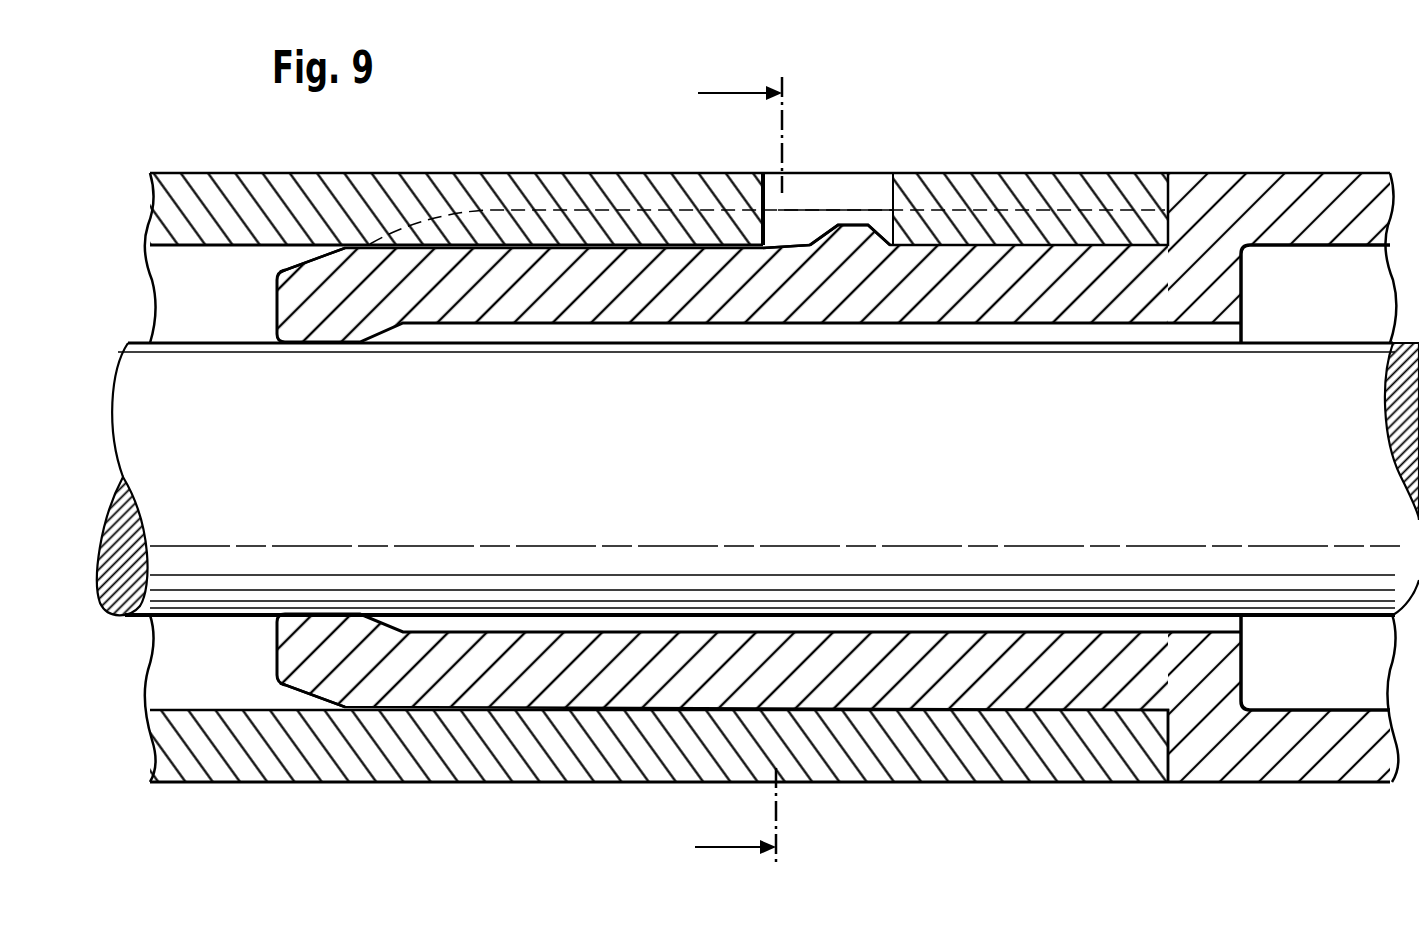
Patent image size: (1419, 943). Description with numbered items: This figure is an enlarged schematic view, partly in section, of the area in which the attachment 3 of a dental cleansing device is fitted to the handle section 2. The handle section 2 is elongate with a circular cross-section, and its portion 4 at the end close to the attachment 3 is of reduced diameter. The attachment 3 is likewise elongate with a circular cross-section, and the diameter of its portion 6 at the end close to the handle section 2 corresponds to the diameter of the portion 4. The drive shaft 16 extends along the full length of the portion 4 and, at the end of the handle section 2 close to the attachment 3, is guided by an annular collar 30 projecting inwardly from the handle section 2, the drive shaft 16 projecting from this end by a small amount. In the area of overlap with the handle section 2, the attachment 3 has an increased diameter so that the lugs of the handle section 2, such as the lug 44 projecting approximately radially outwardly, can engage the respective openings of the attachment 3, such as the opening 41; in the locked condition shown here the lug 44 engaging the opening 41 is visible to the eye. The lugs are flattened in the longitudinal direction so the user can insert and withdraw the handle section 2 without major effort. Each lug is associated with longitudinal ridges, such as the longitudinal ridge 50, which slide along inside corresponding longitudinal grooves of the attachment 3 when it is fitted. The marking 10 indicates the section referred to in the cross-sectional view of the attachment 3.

The handle section 2 is at (1308, 786).
The attachment 3 is at (312, 786).
The portion of the handle section 4 is at (1297, 217).
The portion of the attachment 6 is at (195, 200).
The section line 10 is at (756, 472).
The drive shaft 16 is at (1302, 382).
The annular collar 30 is at (300, 330).
The opening 41 is at (827, 195).
The lug 44 is at (866, 227).
The longitudinal ridge 50 is at (778, 228).